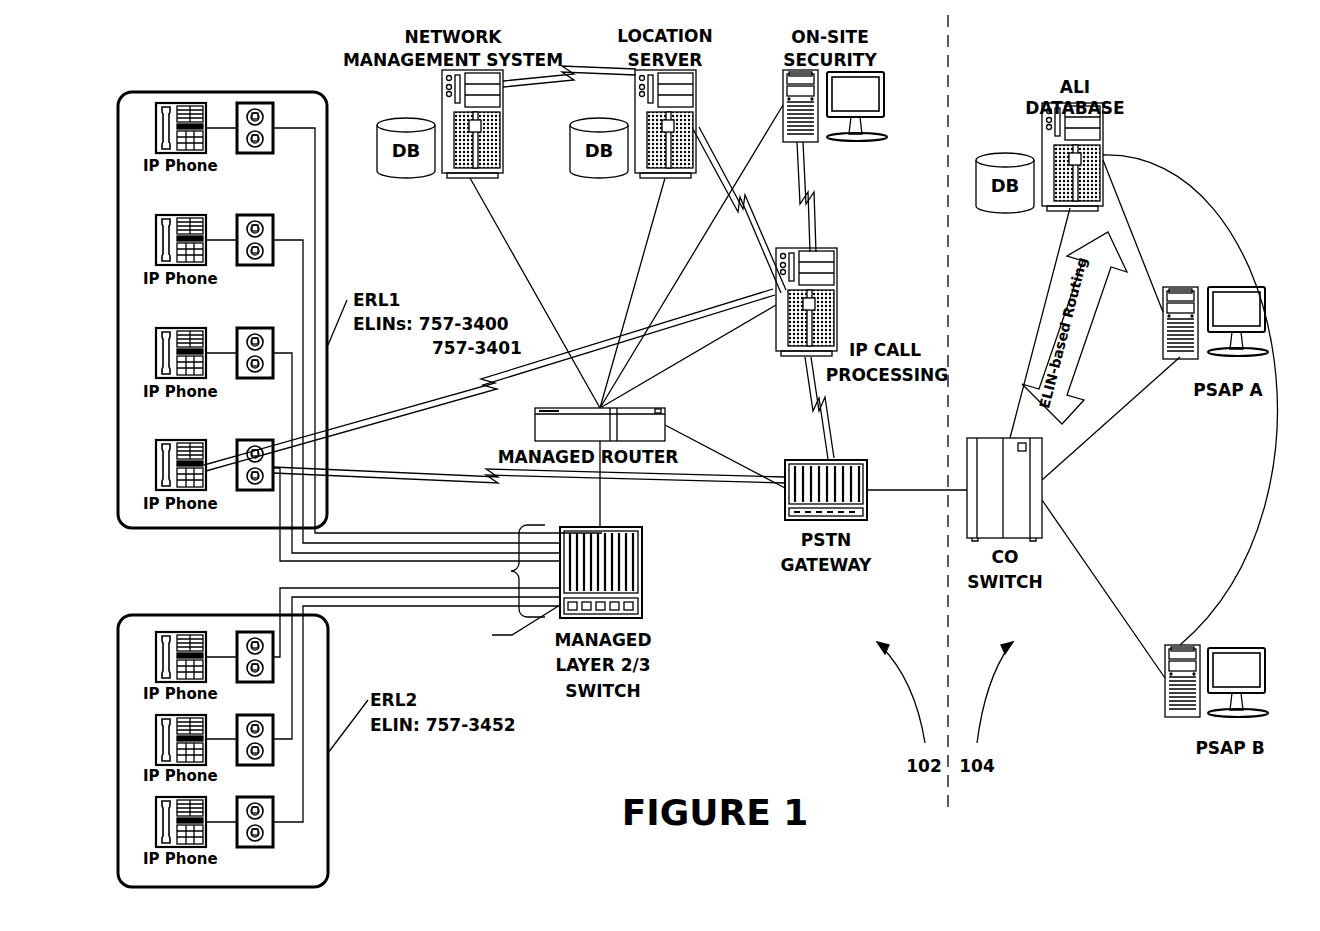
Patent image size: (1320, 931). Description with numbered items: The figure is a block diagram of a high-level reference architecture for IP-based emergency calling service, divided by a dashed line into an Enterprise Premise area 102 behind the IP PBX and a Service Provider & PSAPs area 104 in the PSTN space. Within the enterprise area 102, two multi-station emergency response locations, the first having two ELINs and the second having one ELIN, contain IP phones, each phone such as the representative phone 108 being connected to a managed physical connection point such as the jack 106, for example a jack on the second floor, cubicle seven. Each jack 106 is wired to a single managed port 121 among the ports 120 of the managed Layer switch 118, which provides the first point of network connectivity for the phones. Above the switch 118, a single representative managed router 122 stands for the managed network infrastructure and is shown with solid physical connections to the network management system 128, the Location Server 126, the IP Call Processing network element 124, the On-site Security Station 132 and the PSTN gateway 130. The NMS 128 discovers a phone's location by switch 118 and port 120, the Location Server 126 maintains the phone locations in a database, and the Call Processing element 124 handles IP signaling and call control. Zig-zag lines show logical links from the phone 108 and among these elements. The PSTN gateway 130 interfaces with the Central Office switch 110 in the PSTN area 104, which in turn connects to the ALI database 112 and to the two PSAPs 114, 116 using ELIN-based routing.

The Enterprise Premise area 102 is at (901, 692).
The Service Provider & PSAPs area 104 is at (995, 692).
The jack 106 is at (273, 838).
The IP phone 108 is at (205, 795).
The Central Office switch 110 is at (1045, 497).
The ALI database 112 is at (1103, 118).
The PSAP 114 is at (1180, 287).
The PSAP 116 is at (1185, 645).
The managed Layer 2/3 switch 118 is at (650, 548).
The ports 120 is at (505, 571).
The managed port 121 is at (507, 625).
The managed router 122 is at (640, 408).
The IP Call Processing network element 124 is at (837, 297).
The Location Server 126 is at (696, 95).
The network management system 128 is at (503, 120).
The PSTN gateway 130 is at (840, 460).
The On-site Security Station 132 is at (880, 105).